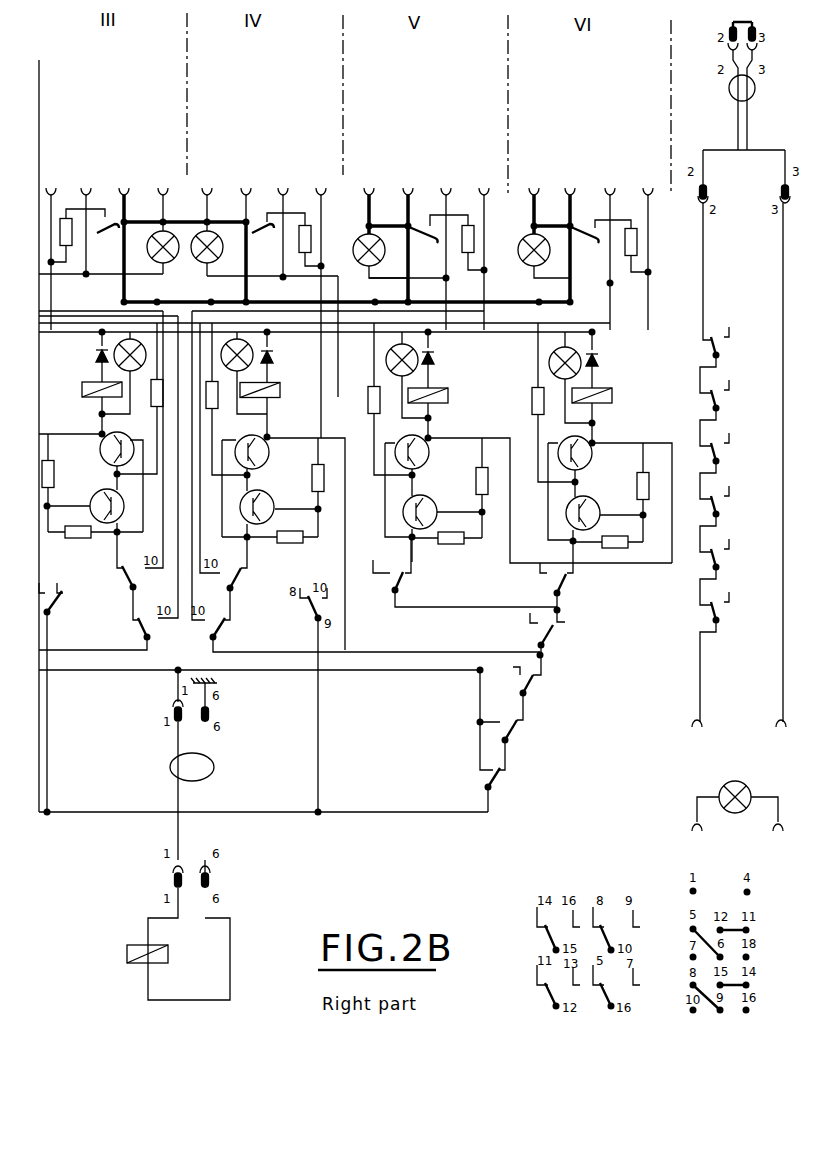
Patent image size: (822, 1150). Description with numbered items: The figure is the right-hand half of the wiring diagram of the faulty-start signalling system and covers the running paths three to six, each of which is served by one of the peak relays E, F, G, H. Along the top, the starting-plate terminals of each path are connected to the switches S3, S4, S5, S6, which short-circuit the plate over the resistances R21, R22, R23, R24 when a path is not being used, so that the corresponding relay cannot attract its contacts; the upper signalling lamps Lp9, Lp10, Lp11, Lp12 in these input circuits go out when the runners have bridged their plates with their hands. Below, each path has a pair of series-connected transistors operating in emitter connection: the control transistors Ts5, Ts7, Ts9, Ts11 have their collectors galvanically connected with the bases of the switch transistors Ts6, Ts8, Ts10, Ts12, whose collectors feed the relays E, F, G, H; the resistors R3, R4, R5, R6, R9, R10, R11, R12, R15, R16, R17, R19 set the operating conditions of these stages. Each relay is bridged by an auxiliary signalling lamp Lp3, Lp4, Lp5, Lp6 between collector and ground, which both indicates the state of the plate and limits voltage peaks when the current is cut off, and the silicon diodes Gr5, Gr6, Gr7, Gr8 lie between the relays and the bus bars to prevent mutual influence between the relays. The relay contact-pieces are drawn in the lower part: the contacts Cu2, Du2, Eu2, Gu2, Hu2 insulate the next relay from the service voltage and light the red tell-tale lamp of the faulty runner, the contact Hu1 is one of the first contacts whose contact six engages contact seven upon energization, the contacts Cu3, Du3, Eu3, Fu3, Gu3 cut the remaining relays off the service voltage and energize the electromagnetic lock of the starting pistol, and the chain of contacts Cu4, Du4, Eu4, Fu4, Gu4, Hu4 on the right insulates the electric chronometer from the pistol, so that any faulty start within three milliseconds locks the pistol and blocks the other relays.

The resistance R21 is at (77, 237).
The resistance R22 is at (296, 241).
The resistance R23 is at (459, 244).
The resistance R24 is at (623, 248).
The switch S3 is at (108, 240).
The switch S4 is at (263, 240).
The switch S5 is at (423, 245).
The switch S6 is at (586, 246).
The signalling lamp Lp9 is at (166, 245).
The signalling lamp Lp10 is at (204, 246).
The signalling lamp Lp11 is at (372, 248).
The signalling lamp Lp12 is at (532, 248).
The signalling lamp Lp3 is at (131, 372).
The signalling lamp Lp4 is at (240, 372).
The signalling lamp Lp5 is at (401, 375).
The signalling lamp Lp6 is at (566, 377).
The peak relay E is at (71, 348).
The peak relay F is at (291, 349).
The peak relay G is at (454, 352).
The peak relay H is at (612, 354).
The silicon diode Gr5 is at (92, 385).
The silicon diode Gr6 is at (260, 386).
The silicon diode Gr7 is at (426, 387).
The silicon diode Gr8 is at (590, 389).
The resistor R3 is at (140, 398).
The resistor R4 is at (226, 399).
The resistor R5 is at (380, 399).
The resistor R6 is at (544, 402).
The resistor R9 is at (58, 483).
The resistor R10 is at (308, 487).
The resistor R11 is at (471, 488).
The resistor R12 is at (633, 492).
The resistor R15 is at (95, 524).
The resistor R16 is at (270, 529).
The resistor R17 is at (447, 529).
The resistor R19 is at (608, 533).
The control transistor Ts5 is at (84, 505).
The switch transistor Ts6 is at (95, 476).
The control transistor Ts7 is at (279, 508).
The switch transistor Ts8 is at (278, 535).
The control transistor Ts9 is at (442, 518).
The switch transistor Ts10 is at (526, 491).
The control transistor Ts11 is at (604, 522).
The switch transistor Ts12 is at (605, 492).
The relay contact Eu2 is at (62, 697).
The relay contact Cu2 is at (123, 572).
The relay contact Du2 is at (99, 630).
The relay contact Hu2 is at (249, 574).
The relay contact Gu2 is at (375, 632).
The relay contact Hu1 is at (465, 572).
The relay contact Gu3 is at (565, 588).
The relay contact Fu3 is at (552, 638).
The relay contact Eu3 is at (531, 687).
The relay contact Du3 is at (514, 730).
The relay contact Cu3 is at (492, 740).
The relay contact Hu4 is at (721, 351).
The relay contact Gu4 is at (722, 404).
The relay contact Fu4 is at (720, 457).
The relay contact Eu4 is at (721, 510).
The relay contact Du4 is at (722, 563).
The relay contact Cu4 is at (721, 656).